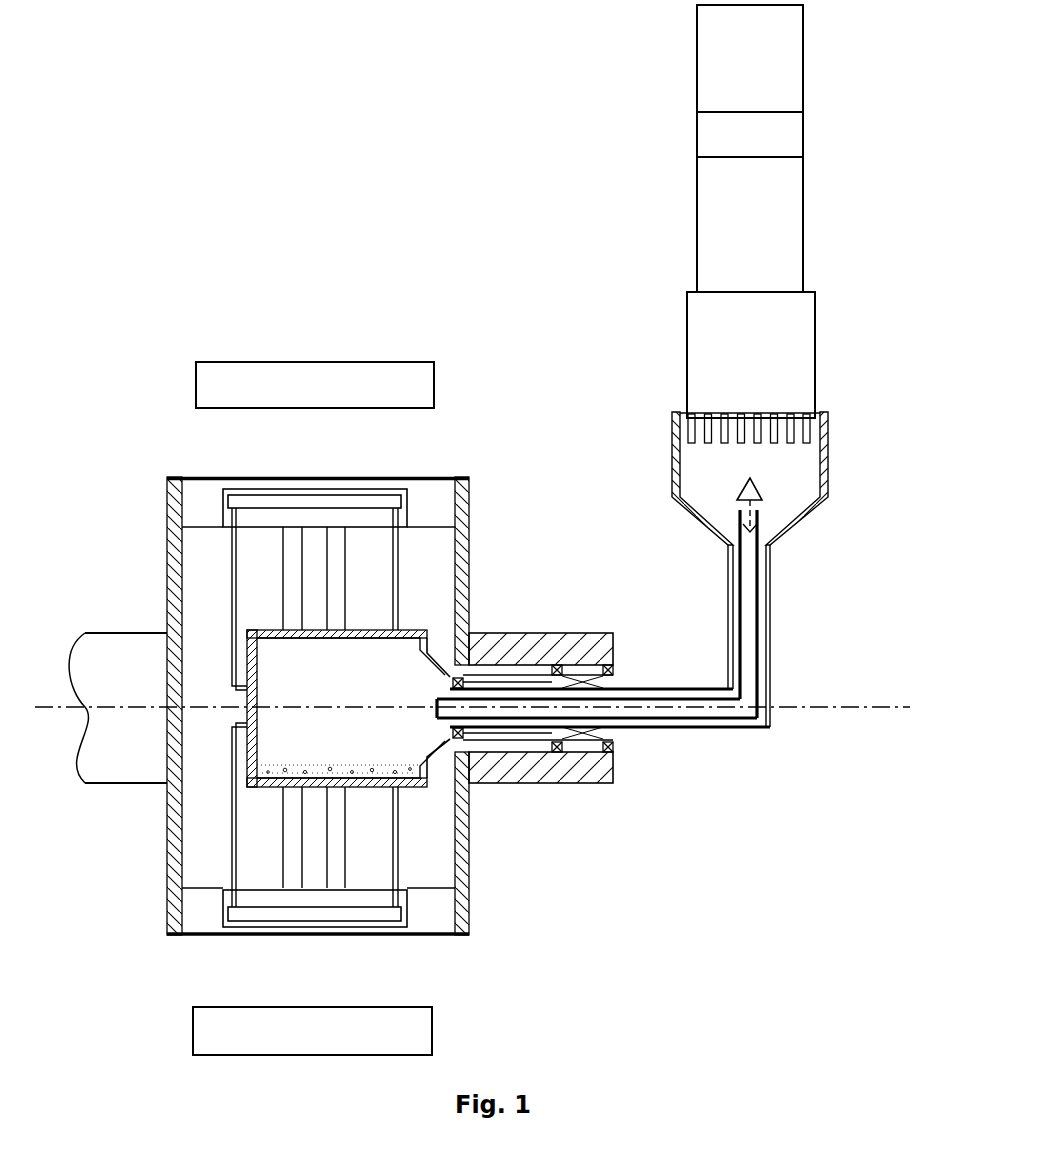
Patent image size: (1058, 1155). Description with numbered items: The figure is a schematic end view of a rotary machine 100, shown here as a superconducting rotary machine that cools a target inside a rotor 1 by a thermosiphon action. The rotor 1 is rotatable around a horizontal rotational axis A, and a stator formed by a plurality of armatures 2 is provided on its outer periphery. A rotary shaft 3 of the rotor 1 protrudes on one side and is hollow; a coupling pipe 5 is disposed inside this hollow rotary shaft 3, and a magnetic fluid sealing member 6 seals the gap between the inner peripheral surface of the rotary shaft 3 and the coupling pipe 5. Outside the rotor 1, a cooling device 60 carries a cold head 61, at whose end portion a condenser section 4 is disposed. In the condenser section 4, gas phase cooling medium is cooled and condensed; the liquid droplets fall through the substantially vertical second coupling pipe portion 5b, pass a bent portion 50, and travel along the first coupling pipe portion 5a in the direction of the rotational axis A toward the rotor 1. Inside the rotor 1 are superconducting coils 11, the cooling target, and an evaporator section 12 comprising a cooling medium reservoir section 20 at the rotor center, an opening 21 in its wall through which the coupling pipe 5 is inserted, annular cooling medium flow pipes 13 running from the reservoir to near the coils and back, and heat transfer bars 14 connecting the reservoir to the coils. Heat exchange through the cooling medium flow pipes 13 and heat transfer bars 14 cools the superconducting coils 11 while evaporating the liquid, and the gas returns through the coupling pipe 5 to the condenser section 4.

The rotary machine 100 is at (165, 91).
The rotor 1 is at (166, 916).
The armatures 2 is at (434, 393).
The rotary shaft 3 is at (88, 633).
The condenser section 4 is at (828, 470).
The coupling pipe 5 is at (872, 623).
The first coupling pipe portion 5a is at (738, 690).
The second coupling pipe portion 5b is at (770, 640).
The magnetic fluid sealing member 6 is at (610, 742).
The superconducting coils 11 is at (386, 494).
The evaporator section 12 is at (430, 613).
The cooling medium flow pipes 13 is at (398, 546).
The heat transfer bars 14 is at (283, 590).
The cooling medium reservoir section 20 is at (345, 675).
The opening 21 is at (455, 742).
The bent portion 50 is at (771, 730).
The cooling device 60 is at (803, 63).
The cold head 61 is at (815, 338).
The rotational axis A is at (853, 710).